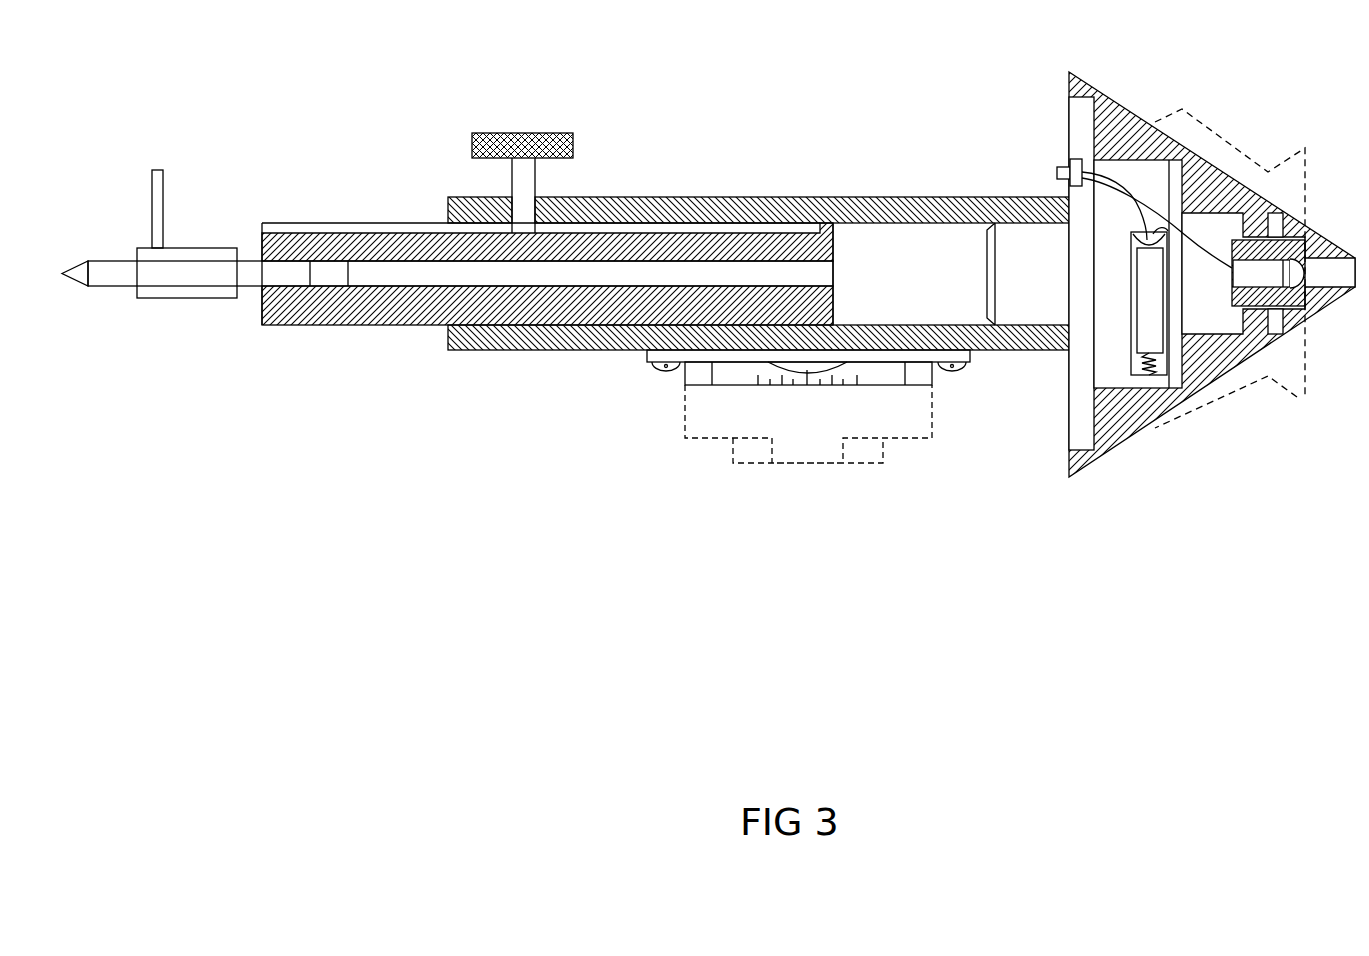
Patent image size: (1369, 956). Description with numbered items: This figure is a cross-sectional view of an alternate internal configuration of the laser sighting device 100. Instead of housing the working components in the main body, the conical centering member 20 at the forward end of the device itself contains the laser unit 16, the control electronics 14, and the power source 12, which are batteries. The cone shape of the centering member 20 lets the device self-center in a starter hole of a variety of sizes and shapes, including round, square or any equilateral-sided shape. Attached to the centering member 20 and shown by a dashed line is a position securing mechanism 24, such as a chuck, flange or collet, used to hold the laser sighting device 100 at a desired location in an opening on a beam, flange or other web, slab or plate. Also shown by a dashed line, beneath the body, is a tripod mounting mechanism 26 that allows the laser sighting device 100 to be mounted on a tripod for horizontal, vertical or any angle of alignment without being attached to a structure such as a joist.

The laser sighting device 100 is at (1137, 334).
The power source 12 is at (1155, 332).
The control electronics 14 is at (1068, 160).
The laser unit 16 is at (1247, 347).
The centering member 20 is at (1106, 452).
The position securing mechanism 24 is at (1293, 380).
The tripod mounting mechanism 26 is at (708, 427).